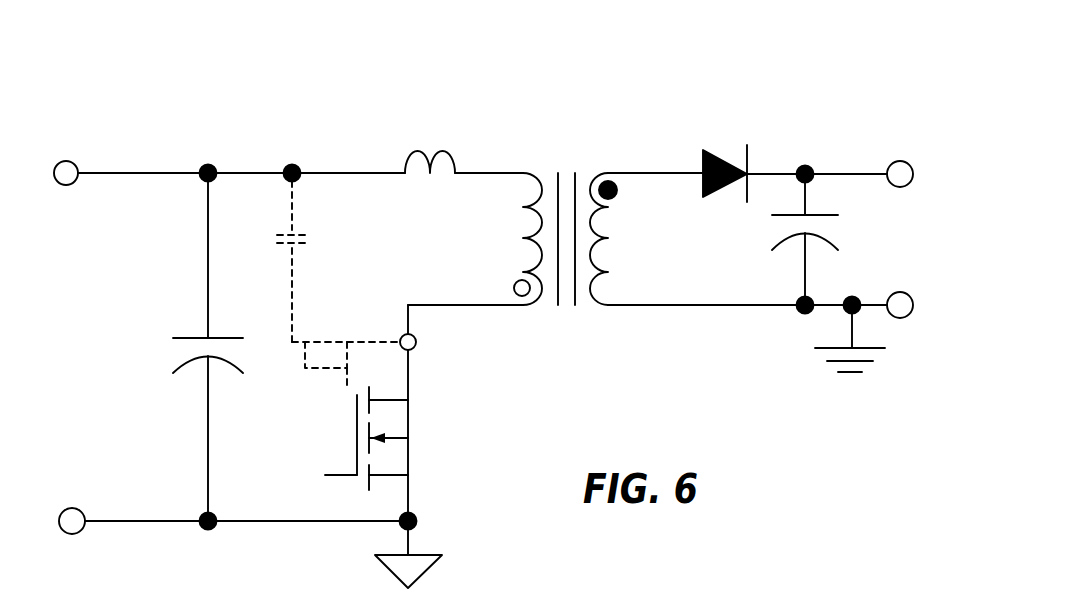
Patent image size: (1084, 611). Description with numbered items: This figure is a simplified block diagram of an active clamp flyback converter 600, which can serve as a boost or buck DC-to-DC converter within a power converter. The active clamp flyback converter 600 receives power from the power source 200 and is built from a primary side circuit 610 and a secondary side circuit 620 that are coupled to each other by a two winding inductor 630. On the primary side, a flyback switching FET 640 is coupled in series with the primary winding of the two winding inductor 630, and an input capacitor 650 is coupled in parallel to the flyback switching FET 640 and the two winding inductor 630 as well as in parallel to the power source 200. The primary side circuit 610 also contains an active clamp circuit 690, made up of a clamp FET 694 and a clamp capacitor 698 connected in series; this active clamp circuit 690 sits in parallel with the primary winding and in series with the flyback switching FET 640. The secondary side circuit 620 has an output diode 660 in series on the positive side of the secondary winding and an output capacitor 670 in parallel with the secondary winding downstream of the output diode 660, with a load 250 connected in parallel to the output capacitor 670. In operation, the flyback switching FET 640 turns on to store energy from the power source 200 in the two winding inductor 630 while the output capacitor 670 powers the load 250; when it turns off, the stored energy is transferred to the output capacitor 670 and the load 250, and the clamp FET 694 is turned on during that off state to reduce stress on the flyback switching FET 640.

The active clamp flyback converter 600 is at (114, 100).
The power source 200 is at (69, 185).
The load 250 is at (898, 162).
The primary side circuit 610 is at (460, 444).
The secondary side circuit 620 is at (882, 239).
The two winding inductor 630 is at (598, 253).
The flyback switching FET 640 is at (355, 443).
The input capacitor 650 is at (181, 362).
The output diode 660 is at (696, 160).
The output capacitor 670 is at (780, 243).
The active clamp circuit 690 is at (332, 236).
The clamp FET 694 is at (323, 357).
The clamp capacitor 698 is at (277, 236).